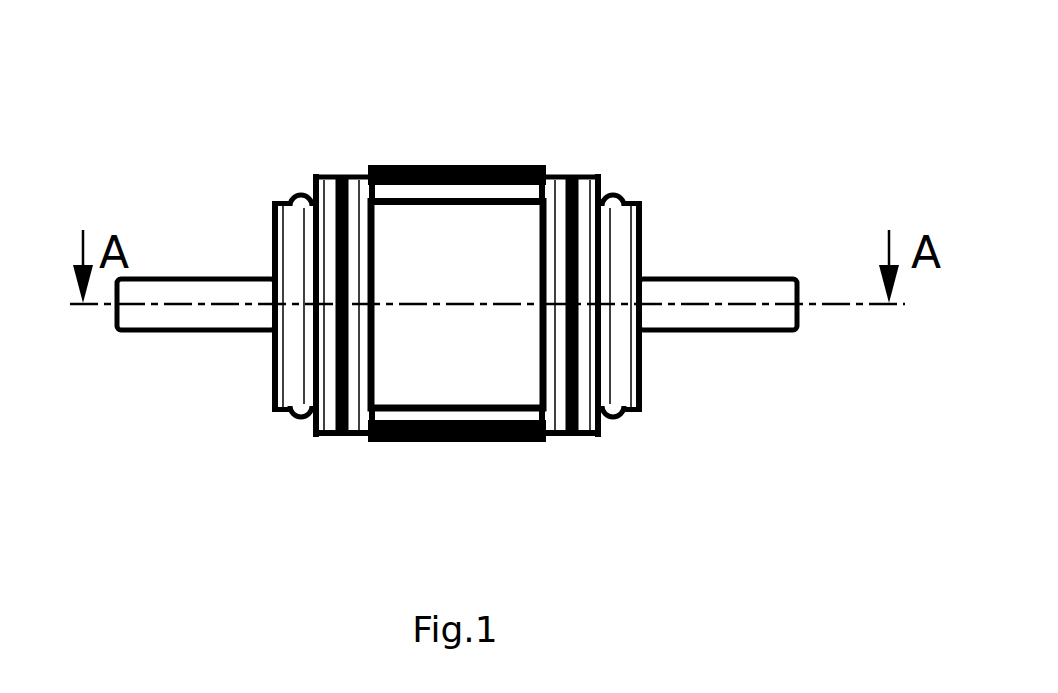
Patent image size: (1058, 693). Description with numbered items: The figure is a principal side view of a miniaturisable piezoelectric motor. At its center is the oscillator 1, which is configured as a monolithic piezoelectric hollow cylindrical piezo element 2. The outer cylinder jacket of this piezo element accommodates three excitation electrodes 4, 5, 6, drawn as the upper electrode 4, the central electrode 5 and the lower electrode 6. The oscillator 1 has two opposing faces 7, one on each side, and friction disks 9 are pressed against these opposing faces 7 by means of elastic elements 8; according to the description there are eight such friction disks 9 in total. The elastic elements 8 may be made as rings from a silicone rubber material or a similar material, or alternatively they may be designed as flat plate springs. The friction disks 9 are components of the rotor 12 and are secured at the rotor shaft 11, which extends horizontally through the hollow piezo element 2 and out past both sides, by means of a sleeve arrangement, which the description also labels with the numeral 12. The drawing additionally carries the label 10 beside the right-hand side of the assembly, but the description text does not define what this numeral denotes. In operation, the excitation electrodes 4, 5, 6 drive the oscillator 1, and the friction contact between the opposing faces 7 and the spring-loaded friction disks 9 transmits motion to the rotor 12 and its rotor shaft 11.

The oscillator 1 is at (508, 118).
The hollow cylindrical piezo element 2 is at (358, 195).
The excitation electrode 4 is at (410, 134).
The excitation electrode 5 is at (438, 228).
The excitation electrode 6 is at (409, 474).
The opposing faces 7 is at (335, 480).
The elastic elements 8 is at (301, 220).
The friction disks 9 is at (327, 195).
The end shield 10 is at (678, 213).
The rotor shaft 11 is at (752, 290).
The rotor 12 is at (248, 392).